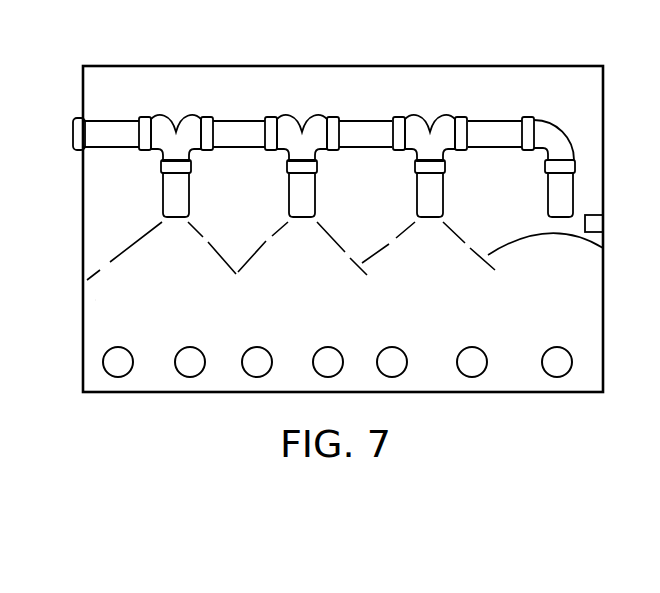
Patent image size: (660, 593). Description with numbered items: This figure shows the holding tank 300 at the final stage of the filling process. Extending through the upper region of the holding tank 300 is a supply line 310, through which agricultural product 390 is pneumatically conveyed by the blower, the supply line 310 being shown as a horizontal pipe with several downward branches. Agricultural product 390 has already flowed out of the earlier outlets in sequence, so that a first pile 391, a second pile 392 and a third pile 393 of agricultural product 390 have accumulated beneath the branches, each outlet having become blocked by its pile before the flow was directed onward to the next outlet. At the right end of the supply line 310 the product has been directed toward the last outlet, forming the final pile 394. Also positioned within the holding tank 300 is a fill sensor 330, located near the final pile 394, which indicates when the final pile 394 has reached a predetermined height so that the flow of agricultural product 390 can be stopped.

The holding tank 300 is at (86, 55).
The supply line 310 is at (51, 132).
The fill sensor 330 is at (593, 215).
The agricultural product 390 is at (105, 309).
The first pile 391 is at (110, 254).
The second pile 392 is at (269, 226).
The third pile 393 is at (394, 226).
The final pile 394 is at (525, 226).